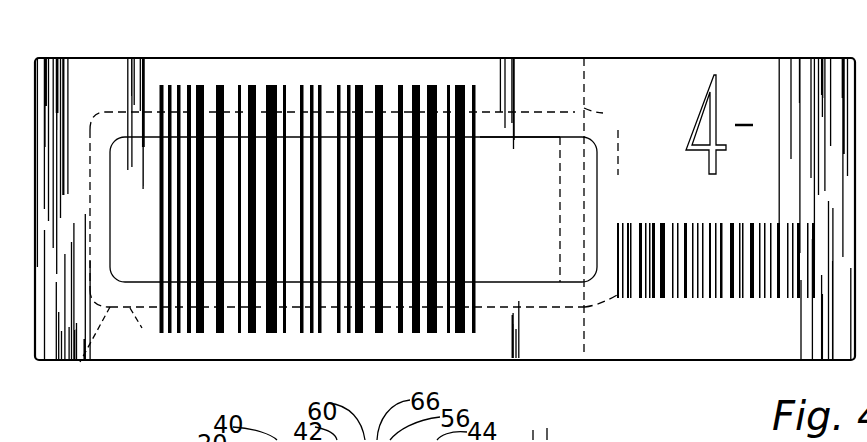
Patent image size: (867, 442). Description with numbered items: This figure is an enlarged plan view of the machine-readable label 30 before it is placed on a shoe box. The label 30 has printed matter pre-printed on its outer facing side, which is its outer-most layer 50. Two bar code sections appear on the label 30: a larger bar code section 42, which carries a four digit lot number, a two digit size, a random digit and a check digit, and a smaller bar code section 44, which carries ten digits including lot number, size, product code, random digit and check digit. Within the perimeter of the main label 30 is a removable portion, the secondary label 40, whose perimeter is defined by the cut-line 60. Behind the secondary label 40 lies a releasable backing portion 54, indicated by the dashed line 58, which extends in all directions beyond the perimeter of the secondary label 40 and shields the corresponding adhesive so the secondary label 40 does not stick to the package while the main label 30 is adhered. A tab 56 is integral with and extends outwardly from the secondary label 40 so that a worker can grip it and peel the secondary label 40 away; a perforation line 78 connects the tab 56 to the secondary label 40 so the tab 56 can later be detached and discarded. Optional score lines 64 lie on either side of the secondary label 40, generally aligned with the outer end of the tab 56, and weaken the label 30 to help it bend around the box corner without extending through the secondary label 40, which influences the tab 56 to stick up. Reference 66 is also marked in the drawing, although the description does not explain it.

The label 30 is at (177, 58).
The secondary label 40 is at (122, 147).
The bar code section 42 is at (383, 87).
The outer-most layer 50 is at (360, 72).
The tab 56 is at (570, 163).
The cut-line 60 is at (495, 136).
The fold line 66 is at (557, 137).
The score lines 64 is at (584, 66).
The releasable backing portion 54 is at (142, 328).
The dashed line 58 is at (83, 365).
The perforation line 78 is at (560, 252).
The bar code section 44 is at (720, 295).